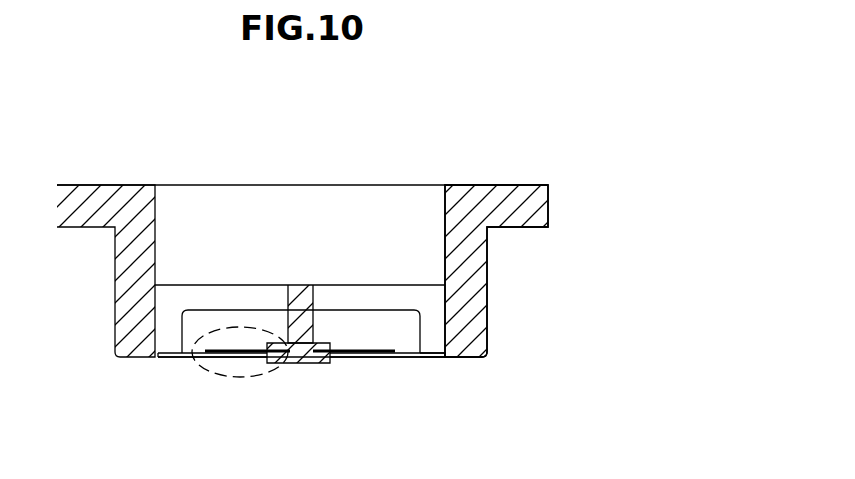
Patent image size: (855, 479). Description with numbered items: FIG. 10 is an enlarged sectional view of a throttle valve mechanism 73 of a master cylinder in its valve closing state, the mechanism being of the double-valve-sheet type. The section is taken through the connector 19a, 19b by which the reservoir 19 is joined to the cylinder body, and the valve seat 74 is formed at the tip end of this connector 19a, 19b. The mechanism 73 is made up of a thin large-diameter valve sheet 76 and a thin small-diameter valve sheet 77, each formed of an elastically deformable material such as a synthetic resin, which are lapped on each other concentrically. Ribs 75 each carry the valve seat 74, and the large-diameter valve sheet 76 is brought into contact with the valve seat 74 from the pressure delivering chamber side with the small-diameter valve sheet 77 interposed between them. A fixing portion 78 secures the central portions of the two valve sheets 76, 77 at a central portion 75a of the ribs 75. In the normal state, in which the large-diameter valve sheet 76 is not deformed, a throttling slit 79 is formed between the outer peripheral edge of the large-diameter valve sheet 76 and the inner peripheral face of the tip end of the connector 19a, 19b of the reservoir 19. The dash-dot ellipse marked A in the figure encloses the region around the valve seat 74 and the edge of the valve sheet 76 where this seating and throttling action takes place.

The reservoir 19 is at (507, 203).
The connector 19a is at (470, 291).
The connector 19b is at (496, 271).
The throttle valve mechanism 73 is at (410, 366).
The valve seat 74 is at (163, 360).
The ribs 75 is at (212, 298).
The central portion 75a is at (299, 285).
The large-diameter valve sheet 76 is at (363, 358).
The small-diameter valve sheet 77 is at (367, 352).
The fixing portion 78 is at (292, 362).
The slit 79 is at (443, 362).
The region A is at (236, 380).